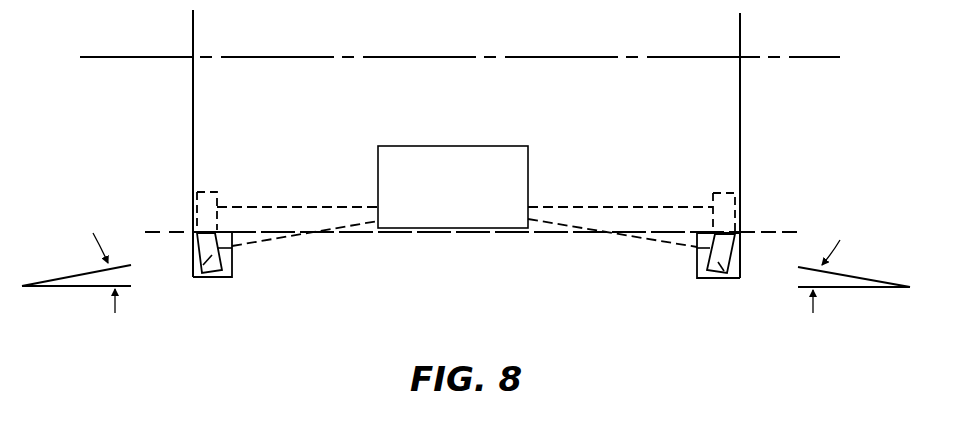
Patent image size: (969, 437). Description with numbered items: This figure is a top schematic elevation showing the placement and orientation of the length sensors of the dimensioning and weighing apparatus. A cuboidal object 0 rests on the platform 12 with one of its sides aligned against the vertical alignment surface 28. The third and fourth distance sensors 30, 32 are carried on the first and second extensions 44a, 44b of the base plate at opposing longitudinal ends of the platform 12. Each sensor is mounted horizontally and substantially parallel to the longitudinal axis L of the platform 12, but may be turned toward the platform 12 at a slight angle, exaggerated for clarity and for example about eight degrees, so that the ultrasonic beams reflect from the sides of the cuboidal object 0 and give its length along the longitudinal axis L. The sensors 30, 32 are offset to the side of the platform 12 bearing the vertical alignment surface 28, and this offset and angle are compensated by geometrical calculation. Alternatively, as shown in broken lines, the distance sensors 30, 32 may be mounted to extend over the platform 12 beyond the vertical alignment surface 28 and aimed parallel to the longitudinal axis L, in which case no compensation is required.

The longitudinal axis L is at (143, 58).
The platform 12 is at (712, 137).
The cuboidal object 0 is at (474, 165).
The vertical alignment surface 28 is at (765, 232).
The third distance sensor 30 is at (192, 203).
The fourth distance sensor 32 is at (750, 196).
The first extension 44a is at (227, 278).
The second extension 44b is at (703, 278).